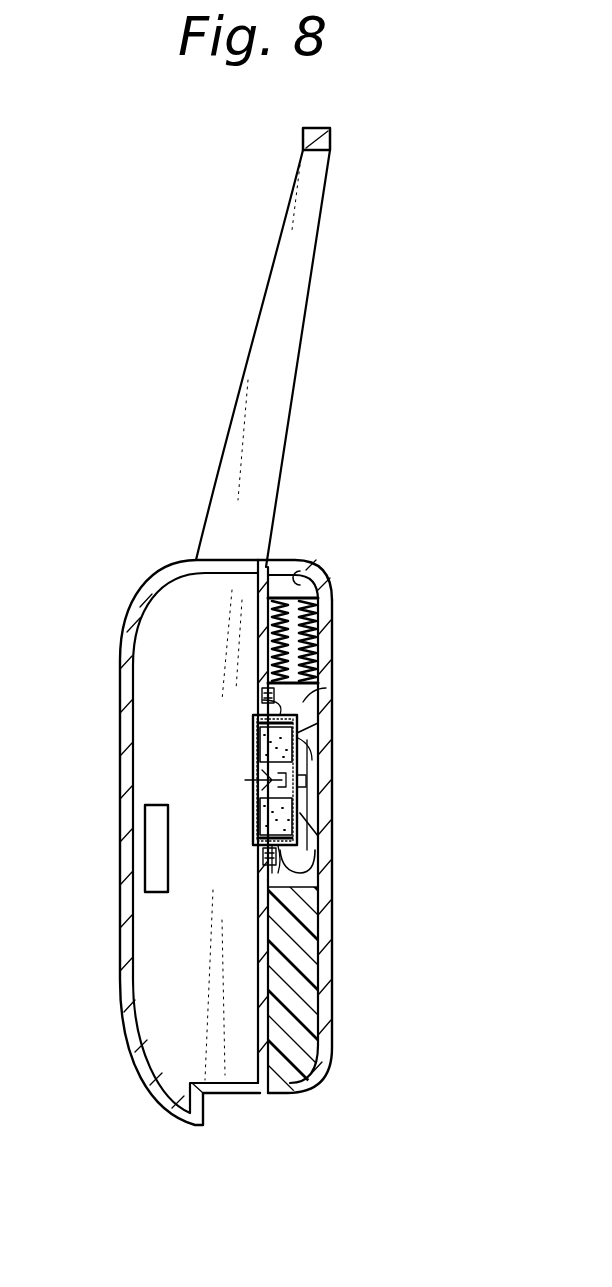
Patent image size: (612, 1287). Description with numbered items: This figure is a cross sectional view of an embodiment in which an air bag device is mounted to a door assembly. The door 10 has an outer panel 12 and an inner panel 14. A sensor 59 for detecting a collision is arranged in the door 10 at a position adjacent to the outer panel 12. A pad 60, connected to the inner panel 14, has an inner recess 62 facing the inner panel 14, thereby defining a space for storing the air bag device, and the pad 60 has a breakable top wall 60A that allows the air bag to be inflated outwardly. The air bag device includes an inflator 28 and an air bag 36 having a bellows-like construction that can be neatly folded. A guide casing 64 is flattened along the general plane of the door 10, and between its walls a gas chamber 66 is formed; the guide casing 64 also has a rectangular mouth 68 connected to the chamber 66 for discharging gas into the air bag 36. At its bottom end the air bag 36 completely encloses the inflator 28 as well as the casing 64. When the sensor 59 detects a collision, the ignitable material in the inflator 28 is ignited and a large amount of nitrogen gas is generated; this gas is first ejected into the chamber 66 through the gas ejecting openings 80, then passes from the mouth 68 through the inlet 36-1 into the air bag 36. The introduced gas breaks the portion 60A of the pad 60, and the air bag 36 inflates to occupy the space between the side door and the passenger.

The door 10 is at (128, 632).
The outer panel 12 is at (122, 912).
The inner panel 14 is at (270, 1008).
The inflator 28 is at (307, 722).
The air bag 36 is at (348, 626).
The inlet 36-1 is at (312, 642).
The sensor 59 is at (155, 810).
The pad 60 is at (320, 1047).
The breakable top wall 60A is at (285, 559).
The inner recess 62 is at (300, 571).
The guide casing 64 is at (300, 815).
The gas chamber 66 is at (312, 853).
The mouth 68 is at (318, 688).
The gas ejecting openings 80 is at (260, 689).